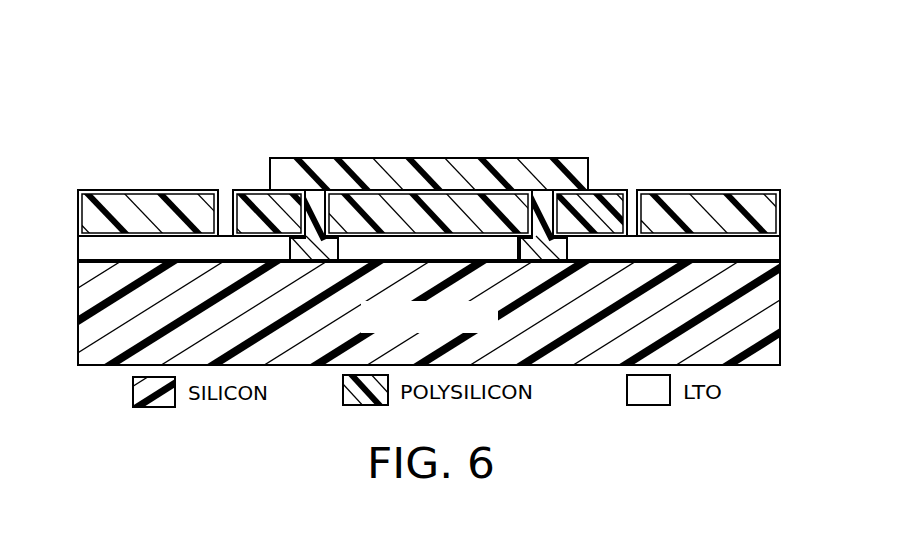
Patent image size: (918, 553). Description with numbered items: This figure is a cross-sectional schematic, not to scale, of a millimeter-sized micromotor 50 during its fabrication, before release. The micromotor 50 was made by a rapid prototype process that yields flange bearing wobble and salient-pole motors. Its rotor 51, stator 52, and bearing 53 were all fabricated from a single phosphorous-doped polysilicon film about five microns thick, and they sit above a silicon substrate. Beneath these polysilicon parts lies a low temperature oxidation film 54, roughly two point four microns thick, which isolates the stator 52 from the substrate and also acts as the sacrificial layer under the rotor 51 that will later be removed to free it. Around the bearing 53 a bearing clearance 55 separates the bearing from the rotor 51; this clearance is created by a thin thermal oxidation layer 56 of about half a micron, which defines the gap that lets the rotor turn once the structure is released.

The micromotor 50 is at (708, 75).
The rotor 51 is at (265, 205).
The stator 52 is at (153, 204).
The bearing 53 is at (518, 160).
The low temperature oxidation (LTO) film 54 is at (108, 243).
The bearing clearance 55 is at (533, 200).
The thermal oxidation layer 56 is at (762, 188).